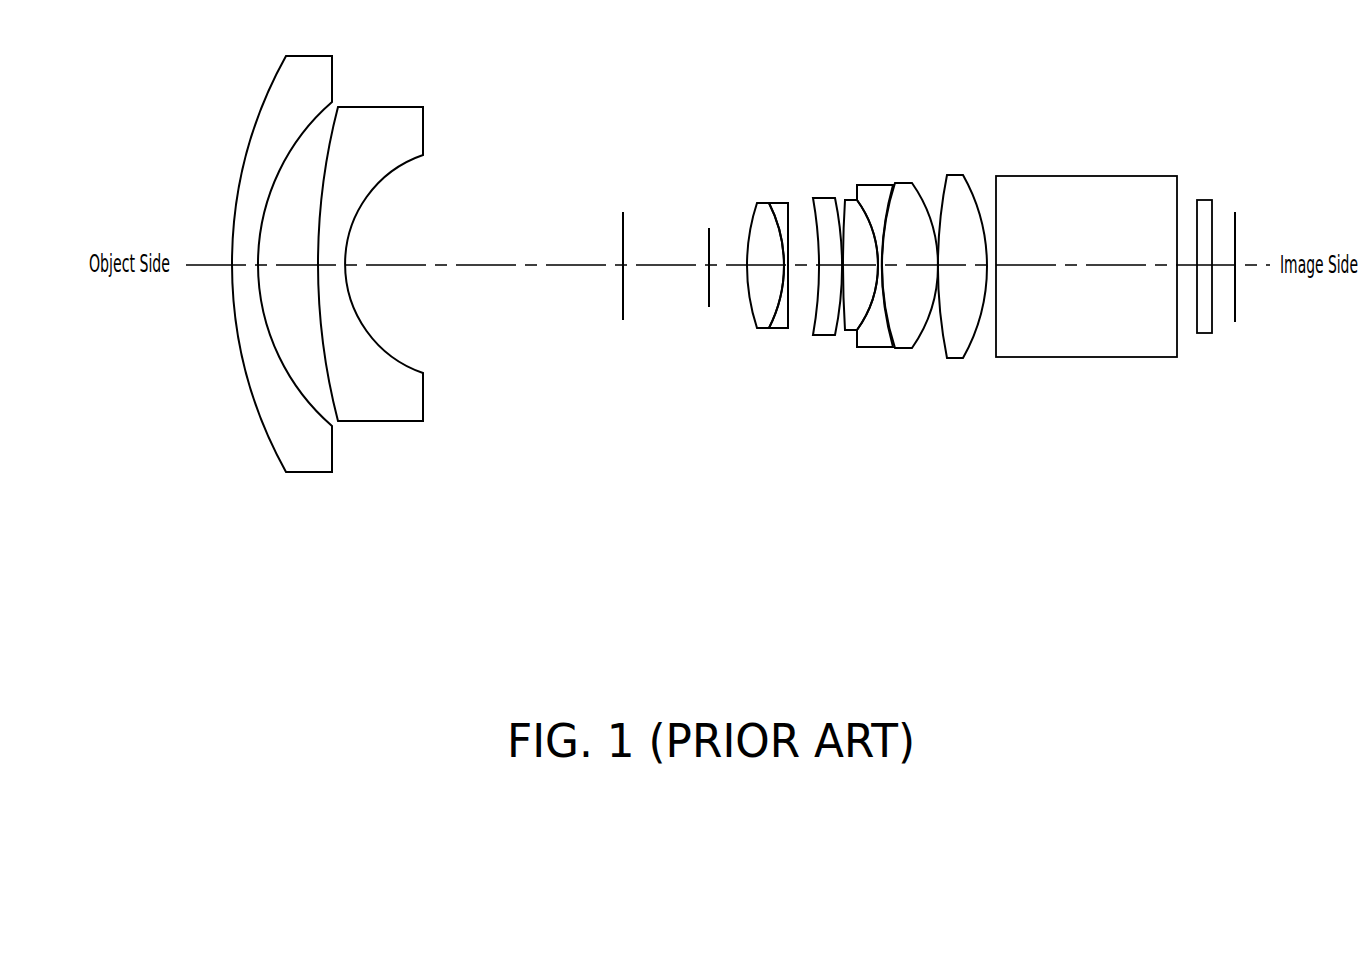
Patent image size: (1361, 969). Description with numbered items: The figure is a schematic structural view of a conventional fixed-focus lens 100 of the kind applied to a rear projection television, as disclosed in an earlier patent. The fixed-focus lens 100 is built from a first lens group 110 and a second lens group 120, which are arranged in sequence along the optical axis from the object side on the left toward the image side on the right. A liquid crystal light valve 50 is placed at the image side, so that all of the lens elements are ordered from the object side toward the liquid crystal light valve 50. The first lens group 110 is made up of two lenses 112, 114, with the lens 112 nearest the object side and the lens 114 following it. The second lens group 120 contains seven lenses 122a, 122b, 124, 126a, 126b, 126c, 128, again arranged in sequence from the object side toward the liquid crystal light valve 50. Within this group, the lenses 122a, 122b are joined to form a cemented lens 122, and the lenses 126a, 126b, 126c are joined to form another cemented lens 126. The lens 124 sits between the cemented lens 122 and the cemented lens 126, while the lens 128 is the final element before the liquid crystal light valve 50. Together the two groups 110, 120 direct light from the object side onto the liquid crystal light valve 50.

The fixed-focus lens 100 is at (728, 345).
The first lens group 110 is at (327, 335).
The lens 112 is at (305, 463).
The lens 114 is at (372, 413).
The second lens group 120 is at (849, 367).
The cemented lens 122 is at (732, 350).
The lens 122a is at (753, 313).
The lens 122b is at (783, 320).
The lens 124 is at (825, 333).
The cemented lens 126 is at (907, 338).
The lens 126a is at (852, 330).
The lens 126b is at (877, 340).
The lens 126c is at (936, 311).
The lens 128 is at (980, 333).
The liquid crystal light valve 50 is at (1237, 305).